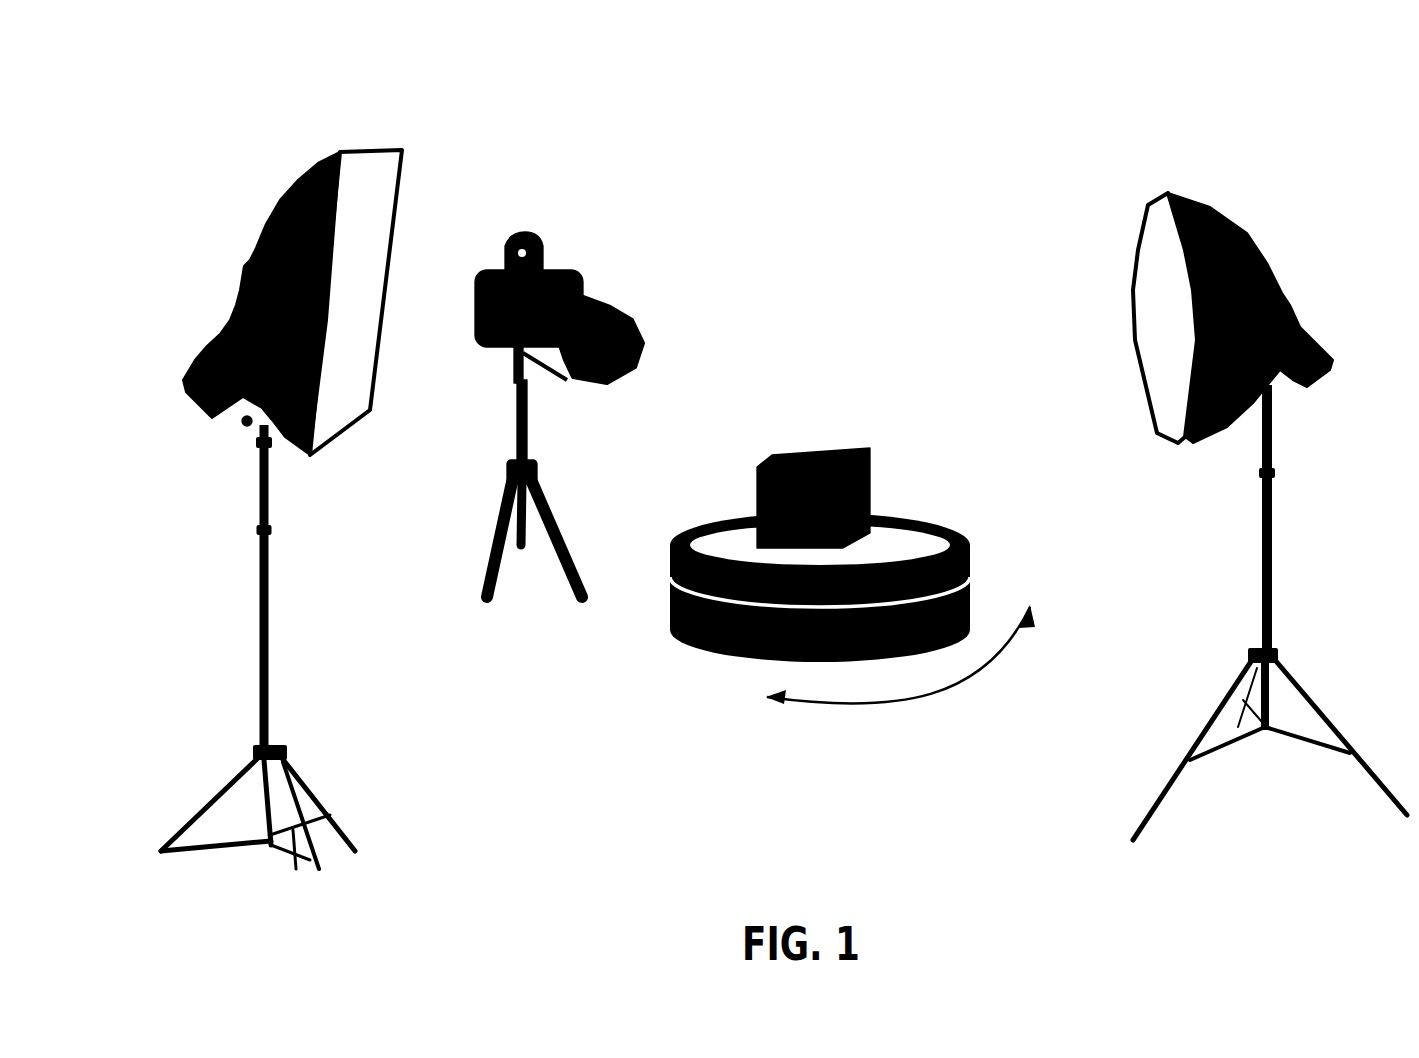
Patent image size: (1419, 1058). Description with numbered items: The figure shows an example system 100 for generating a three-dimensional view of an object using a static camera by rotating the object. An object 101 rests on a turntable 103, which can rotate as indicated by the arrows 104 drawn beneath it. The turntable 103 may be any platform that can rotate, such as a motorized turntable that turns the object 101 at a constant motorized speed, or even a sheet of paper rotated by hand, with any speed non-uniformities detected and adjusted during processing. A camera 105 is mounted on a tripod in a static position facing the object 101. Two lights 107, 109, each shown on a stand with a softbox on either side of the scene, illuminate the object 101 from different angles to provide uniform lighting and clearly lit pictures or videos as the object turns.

The system 100 is at (203, 79).
The object 101 is at (786, 442).
The turntable 103 is at (709, 518).
The arrows 104 is at (976, 681).
The camera 105 is at (620, 304).
The light 107 is at (1156, 186).
The light 109 is at (302, 172).